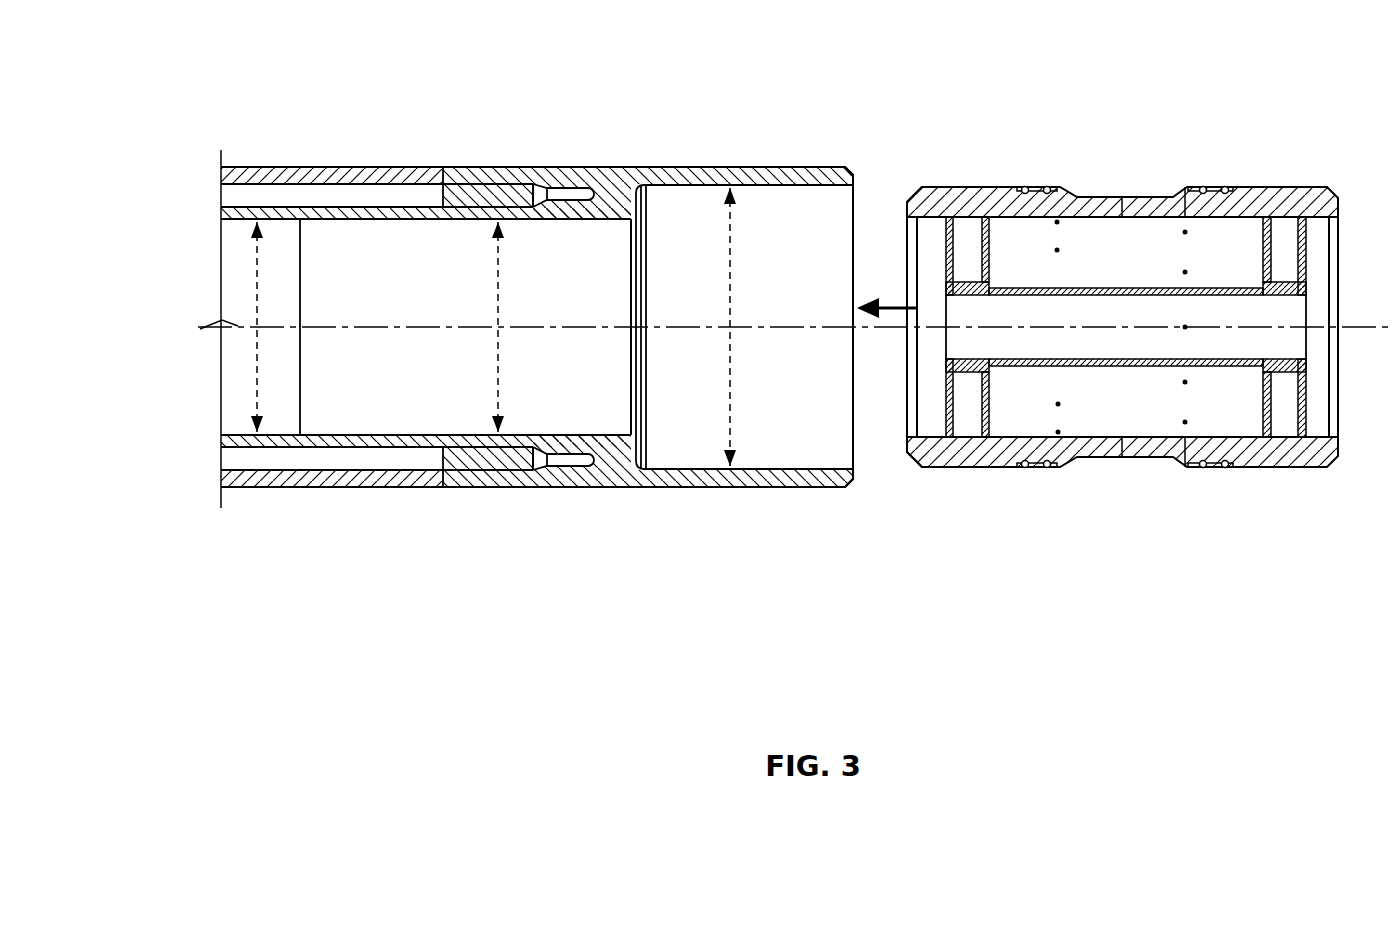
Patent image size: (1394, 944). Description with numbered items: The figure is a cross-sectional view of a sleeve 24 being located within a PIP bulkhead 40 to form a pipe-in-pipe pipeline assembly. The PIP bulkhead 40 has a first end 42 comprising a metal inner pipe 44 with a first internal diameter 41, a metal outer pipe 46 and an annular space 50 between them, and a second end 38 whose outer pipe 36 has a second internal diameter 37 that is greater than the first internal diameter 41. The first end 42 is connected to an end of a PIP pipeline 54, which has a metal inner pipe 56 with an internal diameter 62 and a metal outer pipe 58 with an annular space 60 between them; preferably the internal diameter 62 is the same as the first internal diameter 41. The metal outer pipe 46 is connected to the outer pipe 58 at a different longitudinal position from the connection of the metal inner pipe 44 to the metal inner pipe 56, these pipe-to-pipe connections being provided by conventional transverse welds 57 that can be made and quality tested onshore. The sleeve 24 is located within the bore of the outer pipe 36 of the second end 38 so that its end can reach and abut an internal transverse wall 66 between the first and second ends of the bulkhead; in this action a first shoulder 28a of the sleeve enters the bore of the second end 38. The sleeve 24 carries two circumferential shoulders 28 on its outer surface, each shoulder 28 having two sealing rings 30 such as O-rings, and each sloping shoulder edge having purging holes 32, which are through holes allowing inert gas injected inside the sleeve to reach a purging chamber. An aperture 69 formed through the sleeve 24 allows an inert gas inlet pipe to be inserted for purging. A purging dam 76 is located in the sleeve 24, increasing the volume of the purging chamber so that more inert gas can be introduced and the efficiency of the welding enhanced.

The sleeve 24 is at (1148, 578).
The circumferential shoulder 28 is at (1290, 467).
The first shoulder 28a is at (965, 187).
The sealing ring 30 is at (1048, 468).
The purging hole 32 is at (1058, 432).
The outer pipe 36 is at (722, 487).
The second internal diameter 37 is at (730, 227).
The second end 38 is at (850, 487).
The PIP bulkhead 40 is at (620, 578).
The first internal diameter 41 is at (503, 372).
The first end 42 is at (488, 78).
The metal inner pipe 44 is at (400, 240).
The metal outer pipe 46 is at (542, 168).
The annular space 50 is at (503, 196).
The PIP pipeline 54 is at (299, 150).
The metal inner pipe 56 is at (236, 218).
The transverse weld 57 is at (429, 158).
The metal outer pipe 58 is at (255, 166).
The annular space 60 is at (347, 197).
The internal diameter 62 is at (256, 275).
The internal transverse wall 66 is at (645, 202).
The aperture 69 is at (1128, 160).
The purging dam 76 is at (1263, 263).